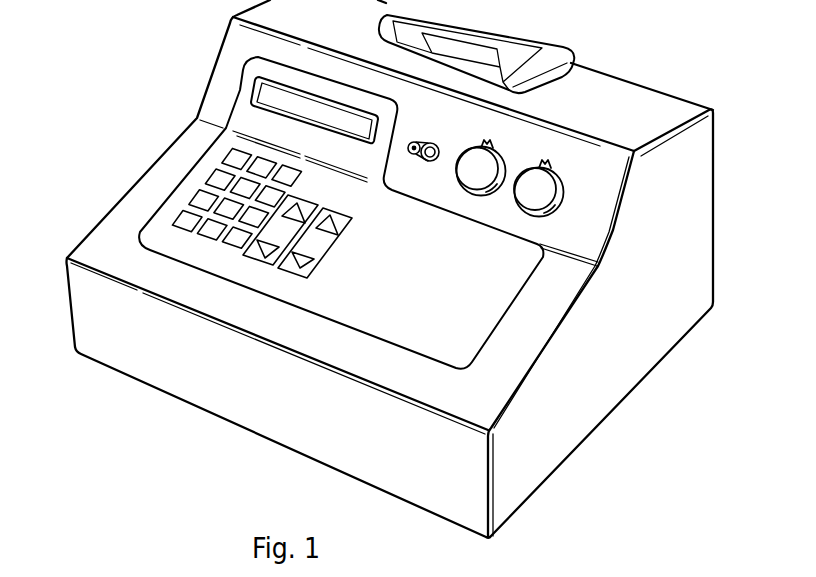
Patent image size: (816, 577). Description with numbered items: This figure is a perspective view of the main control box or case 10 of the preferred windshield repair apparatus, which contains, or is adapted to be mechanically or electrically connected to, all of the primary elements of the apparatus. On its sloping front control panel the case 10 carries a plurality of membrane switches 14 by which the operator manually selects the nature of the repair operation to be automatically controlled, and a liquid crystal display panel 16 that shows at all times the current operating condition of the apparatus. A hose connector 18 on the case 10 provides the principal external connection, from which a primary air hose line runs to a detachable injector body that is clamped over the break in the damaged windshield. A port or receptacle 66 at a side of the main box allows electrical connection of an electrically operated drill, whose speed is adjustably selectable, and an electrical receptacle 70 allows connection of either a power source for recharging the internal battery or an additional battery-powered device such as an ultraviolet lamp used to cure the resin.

The main control box or case 10 is at (128, 218).
The membrane switches 14 is at (222, 178).
The liquid crystal display (LCD) panel 16 is at (277, 98).
The hose connector 18 is at (437, 145).
The port or receptacle 66 is at (488, 168).
The electrical receptacle 70 is at (538, 185).